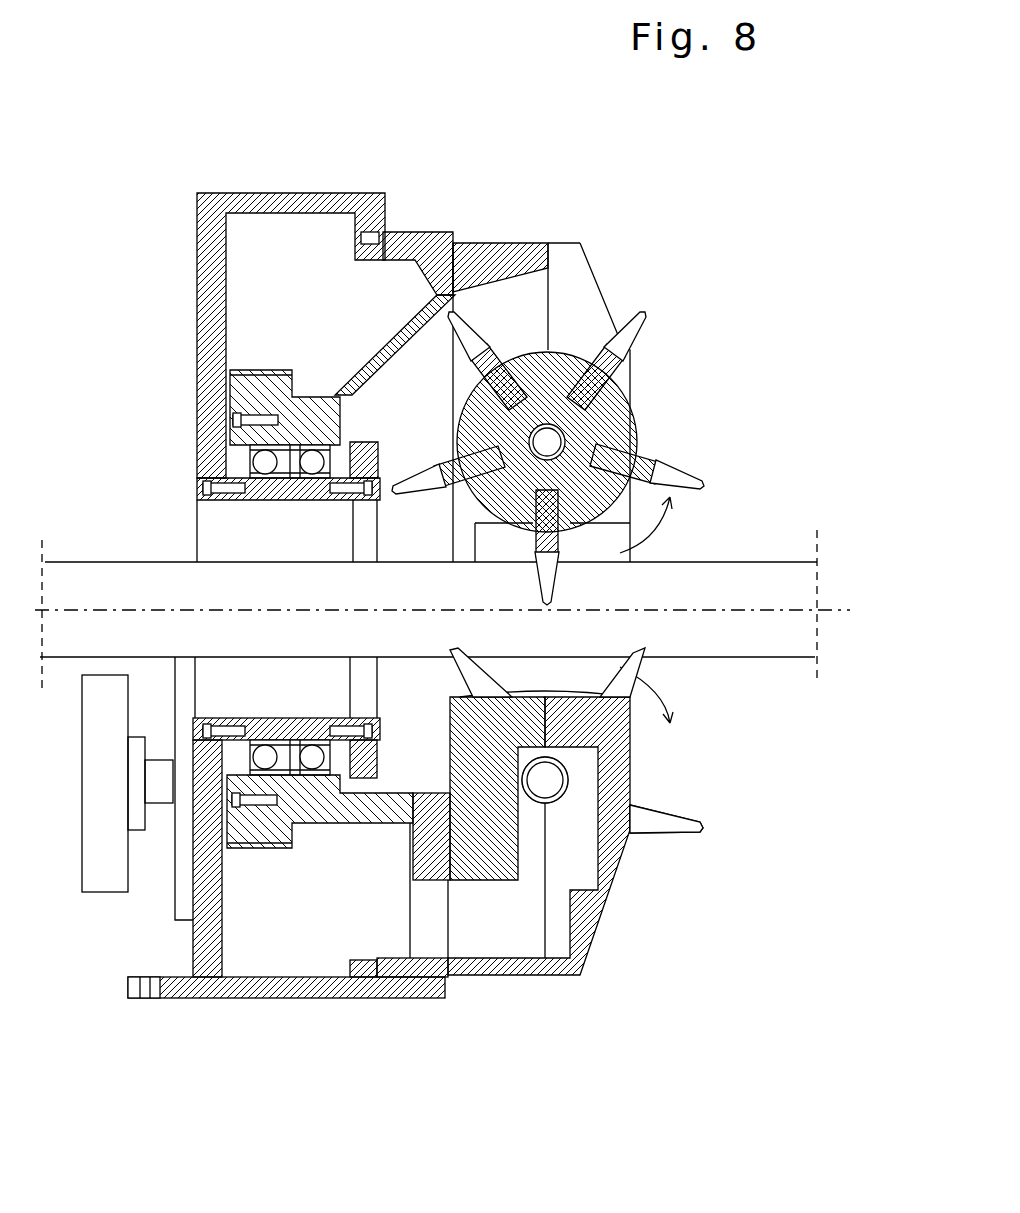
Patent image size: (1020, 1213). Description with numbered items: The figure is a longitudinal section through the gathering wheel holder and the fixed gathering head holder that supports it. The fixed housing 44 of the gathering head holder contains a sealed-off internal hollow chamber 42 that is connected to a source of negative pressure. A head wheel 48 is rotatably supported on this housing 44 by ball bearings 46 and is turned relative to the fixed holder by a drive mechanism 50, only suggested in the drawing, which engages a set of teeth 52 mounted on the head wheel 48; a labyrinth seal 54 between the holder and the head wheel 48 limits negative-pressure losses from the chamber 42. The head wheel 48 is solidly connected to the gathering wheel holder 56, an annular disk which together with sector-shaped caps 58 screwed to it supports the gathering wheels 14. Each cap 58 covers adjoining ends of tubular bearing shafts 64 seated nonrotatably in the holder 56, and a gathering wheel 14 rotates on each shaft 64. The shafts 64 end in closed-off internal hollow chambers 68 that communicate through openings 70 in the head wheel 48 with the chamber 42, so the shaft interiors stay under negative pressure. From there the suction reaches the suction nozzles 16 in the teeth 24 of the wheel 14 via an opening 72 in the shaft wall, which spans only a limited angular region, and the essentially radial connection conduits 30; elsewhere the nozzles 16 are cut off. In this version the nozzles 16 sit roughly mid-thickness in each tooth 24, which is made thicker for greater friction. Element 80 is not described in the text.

The gathering wheel 14 is at (637, 403).
The suction nozzle 16 is at (667, 460).
The tooth 24 is at (690, 475).
The conduit 30 is at (650, 418).
The internal hollow chamber 42 is at (316, 314).
The housing 44 is at (197, 305).
The ball bearings 46 is at (268, 500).
The head wheel 48 is at (427, 242).
The drive mechanism 50 is at (80, 892).
The set of teeth 52 is at (285, 848).
The labyrinth seal 54 is at (367, 998).
The gathering wheel holder 56 is at (563, 258).
The sector-shaped cap 58 is at (588, 287).
The bearing shaft 64 is at (528, 355).
The internal hollow chamber 68 is at (525, 920).
The opening 70 is at (425, 940).
The opening 72 is at (540, 458).
The spacer block 80 is at (372, 755).